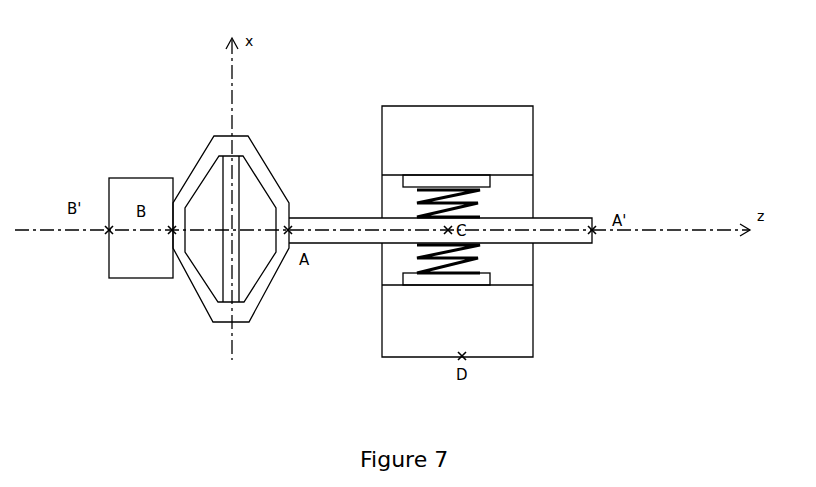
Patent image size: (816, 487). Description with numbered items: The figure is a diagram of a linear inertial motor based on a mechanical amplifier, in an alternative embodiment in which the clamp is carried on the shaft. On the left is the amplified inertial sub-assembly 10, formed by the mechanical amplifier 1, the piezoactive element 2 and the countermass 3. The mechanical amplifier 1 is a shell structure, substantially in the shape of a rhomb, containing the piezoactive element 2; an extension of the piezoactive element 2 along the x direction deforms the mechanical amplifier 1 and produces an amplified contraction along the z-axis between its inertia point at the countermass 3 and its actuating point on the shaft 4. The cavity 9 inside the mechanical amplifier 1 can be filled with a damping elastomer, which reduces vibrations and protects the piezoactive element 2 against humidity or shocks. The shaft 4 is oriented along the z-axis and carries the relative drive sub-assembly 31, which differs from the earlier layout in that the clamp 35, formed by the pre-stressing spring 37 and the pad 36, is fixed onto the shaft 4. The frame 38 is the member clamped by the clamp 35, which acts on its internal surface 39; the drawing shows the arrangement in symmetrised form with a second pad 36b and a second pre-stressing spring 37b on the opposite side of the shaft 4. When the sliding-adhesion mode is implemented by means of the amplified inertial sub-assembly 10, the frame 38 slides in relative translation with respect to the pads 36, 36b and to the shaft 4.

The first inertial sub-assembly 10 is at (145, 114).
The mechanical amplifier 1 is at (207, 148).
The piezoactive element 2 is at (223, 253).
The countermass 3 is at (132, 178).
The shaft 4 is at (303, 218).
The cavity 9 is at (252, 252).
The relative drive sub-assembly 31 is at (677, 97).
The clamp 35 is at (563, 155).
The pad 36 is at (490, 187).
The pad 36b is at (490, 280).
The pre-stressing spring 37 is at (490, 205).
The pre-stressing spring 37b is at (485, 257).
The frame 38 is at (498, 112).
The internal surface 39 is at (393, 282).